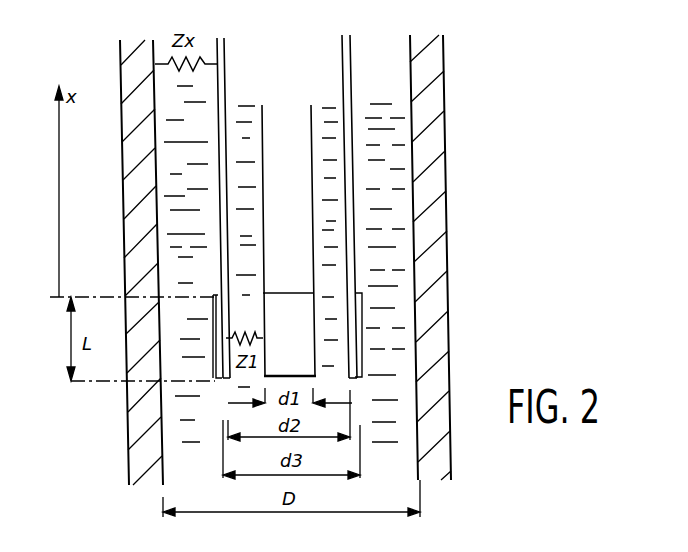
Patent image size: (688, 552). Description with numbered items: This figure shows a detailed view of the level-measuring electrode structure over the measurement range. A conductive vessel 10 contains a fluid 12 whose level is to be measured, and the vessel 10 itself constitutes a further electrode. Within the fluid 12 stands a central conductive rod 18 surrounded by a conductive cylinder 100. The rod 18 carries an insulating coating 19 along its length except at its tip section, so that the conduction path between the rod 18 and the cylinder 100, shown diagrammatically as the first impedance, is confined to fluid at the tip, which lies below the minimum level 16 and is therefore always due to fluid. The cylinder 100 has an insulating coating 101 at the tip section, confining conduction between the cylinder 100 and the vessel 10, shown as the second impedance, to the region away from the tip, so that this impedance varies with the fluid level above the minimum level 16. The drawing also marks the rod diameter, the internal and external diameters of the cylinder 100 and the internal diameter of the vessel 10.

The vessel 10 is at (313, 260).
The fluid 12 is at (200, 416).
The minimum level 16 is at (430, 278).
The central conductive rod 18 is at (288, 123).
The insulating coating 19 is at (314, 216).
The surrounding conductive cylinder 100 is at (353, 176).
The insulating coating 101 is at (361, 339).